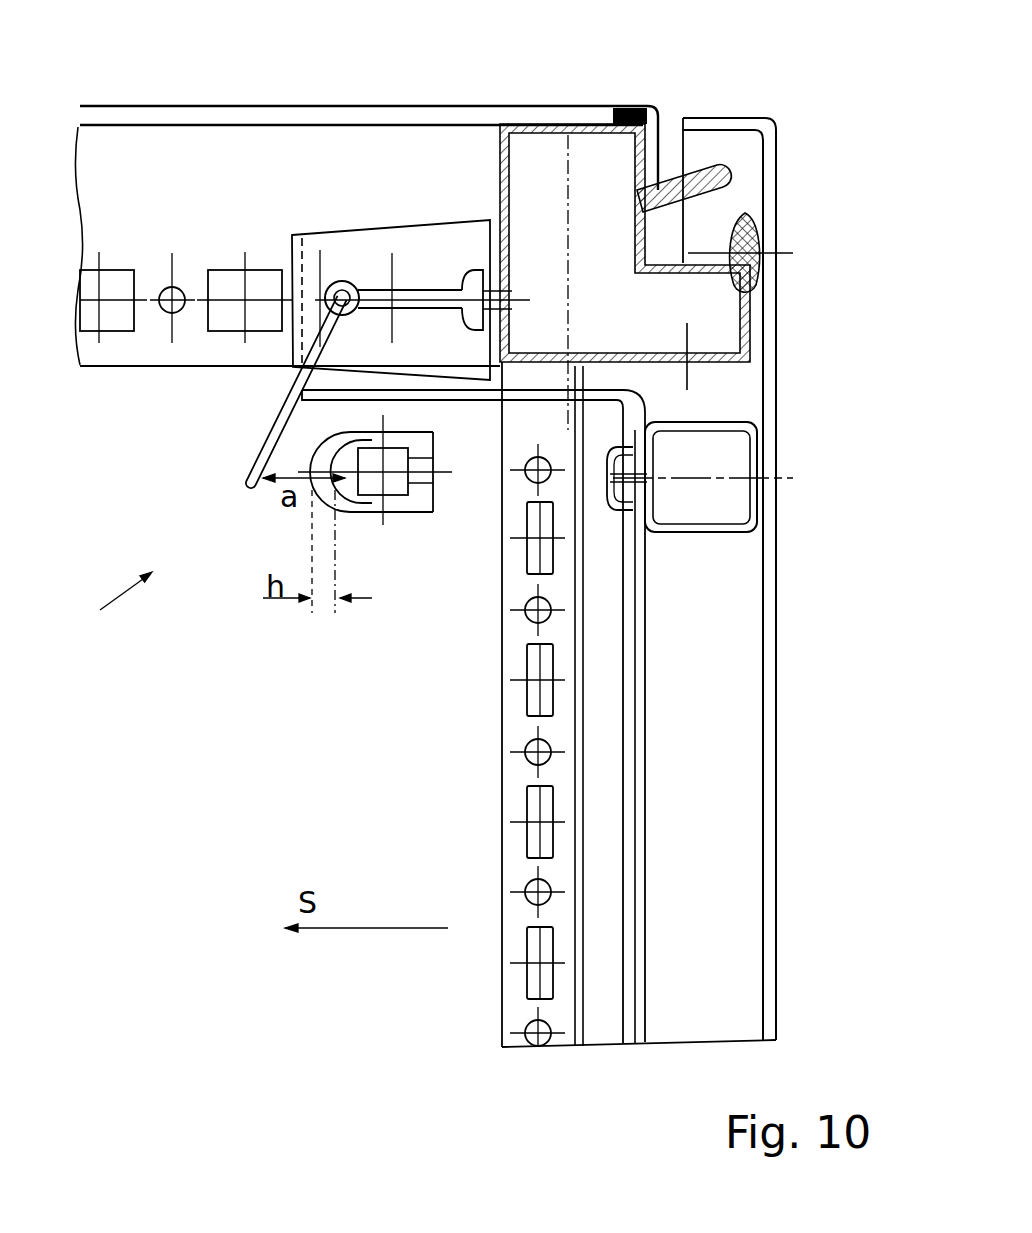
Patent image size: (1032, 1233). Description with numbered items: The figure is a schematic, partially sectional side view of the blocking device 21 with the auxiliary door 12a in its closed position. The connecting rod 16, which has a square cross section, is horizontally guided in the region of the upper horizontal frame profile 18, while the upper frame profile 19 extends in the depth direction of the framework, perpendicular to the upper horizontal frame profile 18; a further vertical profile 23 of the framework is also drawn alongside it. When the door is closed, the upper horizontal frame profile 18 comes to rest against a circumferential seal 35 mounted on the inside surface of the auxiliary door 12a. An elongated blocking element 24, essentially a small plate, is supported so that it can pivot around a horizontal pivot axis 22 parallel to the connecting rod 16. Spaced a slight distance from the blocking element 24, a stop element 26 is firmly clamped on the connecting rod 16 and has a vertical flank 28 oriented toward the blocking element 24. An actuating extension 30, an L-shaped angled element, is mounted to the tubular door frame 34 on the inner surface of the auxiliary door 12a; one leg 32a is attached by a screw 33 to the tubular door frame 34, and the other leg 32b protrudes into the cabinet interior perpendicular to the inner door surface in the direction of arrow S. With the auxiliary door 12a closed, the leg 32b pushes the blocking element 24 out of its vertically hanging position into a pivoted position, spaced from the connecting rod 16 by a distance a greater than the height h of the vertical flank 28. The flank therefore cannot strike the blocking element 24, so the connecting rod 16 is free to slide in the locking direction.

The auxiliary door 12a is at (762, 850).
The connecting rod 16 is at (382, 468).
The upper horizontal frame profile 18 is at (548, 130).
The upper frame profile 19 is at (347, 167).
The blocking device 21 is at (107, 611).
The pivot axis 22 is at (340, 288).
The vertical rail 23 is at (515, 857).
The blocking element 24 is at (280, 428).
The stop element 26 is at (423, 442).
The vertical flank 28 is at (308, 462).
The actuating extension 30 is at (633, 412).
The leg 32a is at (296, 308).
The leg 32b is at (633, 440).
The screw 33 is at (636, 485).
The tubular door frame 34 is at (762, 507).
The circumferential seal 35 is at (740, 225).